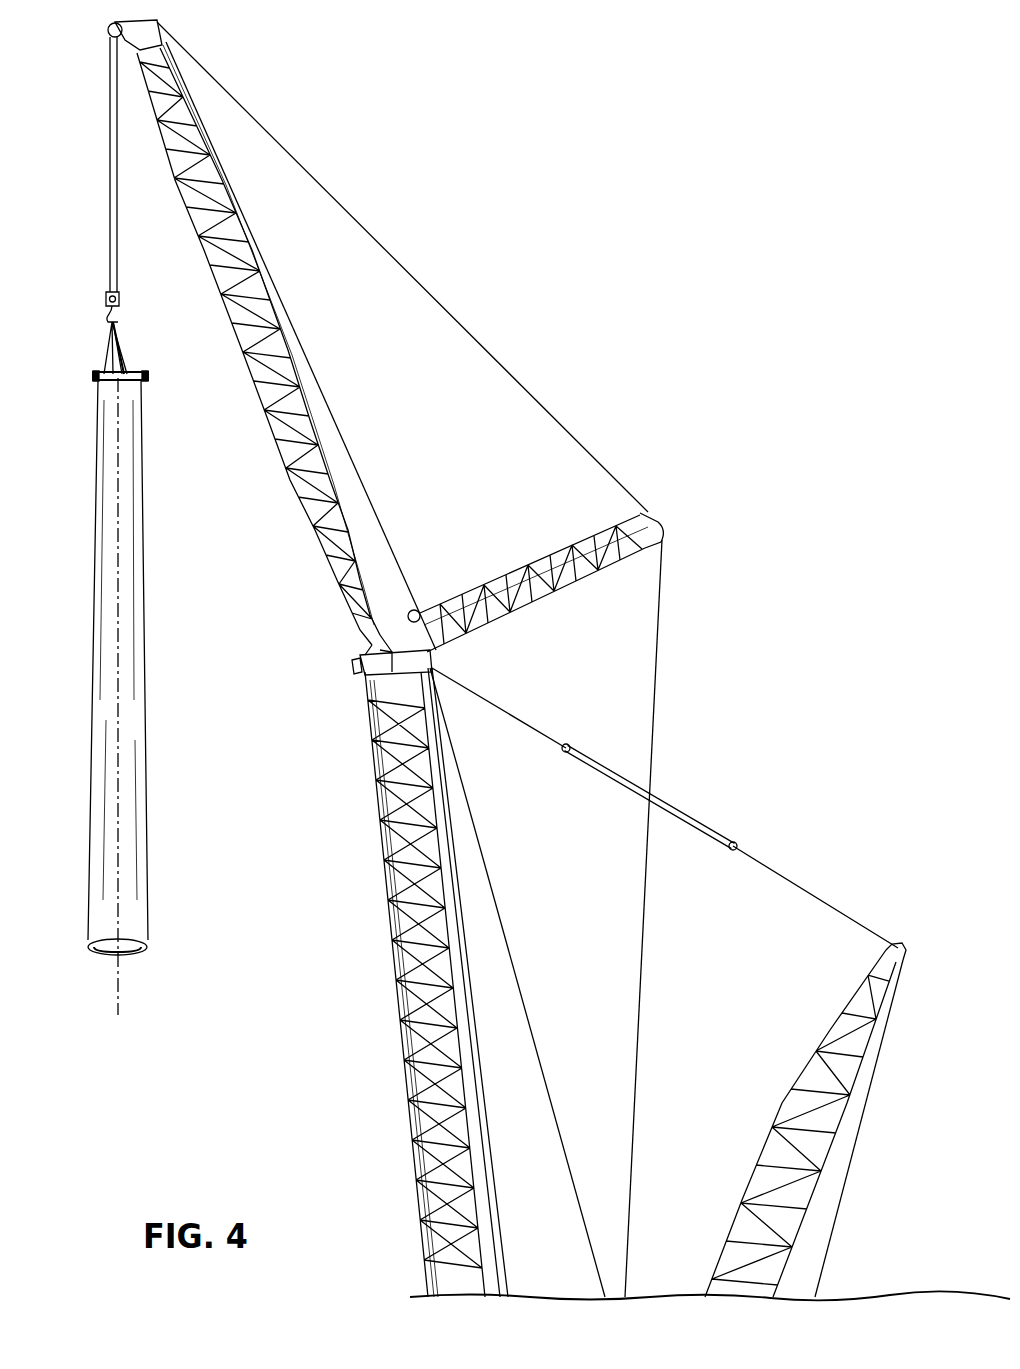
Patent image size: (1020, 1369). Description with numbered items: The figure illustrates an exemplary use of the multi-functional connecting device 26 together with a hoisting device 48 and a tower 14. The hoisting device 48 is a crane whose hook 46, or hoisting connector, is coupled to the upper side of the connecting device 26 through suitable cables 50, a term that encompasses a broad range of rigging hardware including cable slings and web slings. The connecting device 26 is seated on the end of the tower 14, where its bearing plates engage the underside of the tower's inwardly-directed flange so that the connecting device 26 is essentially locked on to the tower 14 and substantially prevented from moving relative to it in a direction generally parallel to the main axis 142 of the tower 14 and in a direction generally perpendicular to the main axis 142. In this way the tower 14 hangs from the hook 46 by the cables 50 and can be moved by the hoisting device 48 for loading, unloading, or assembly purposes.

The hoisting device 48 is at (766, 538).
The hook 46 is at (120, 320).
The cables 50 is at (110, 340).
The multi-functional connecting device 26 is at (97, 368).
The tower 14 is at (148, 690).
The main axis 142 is at (121, 428).